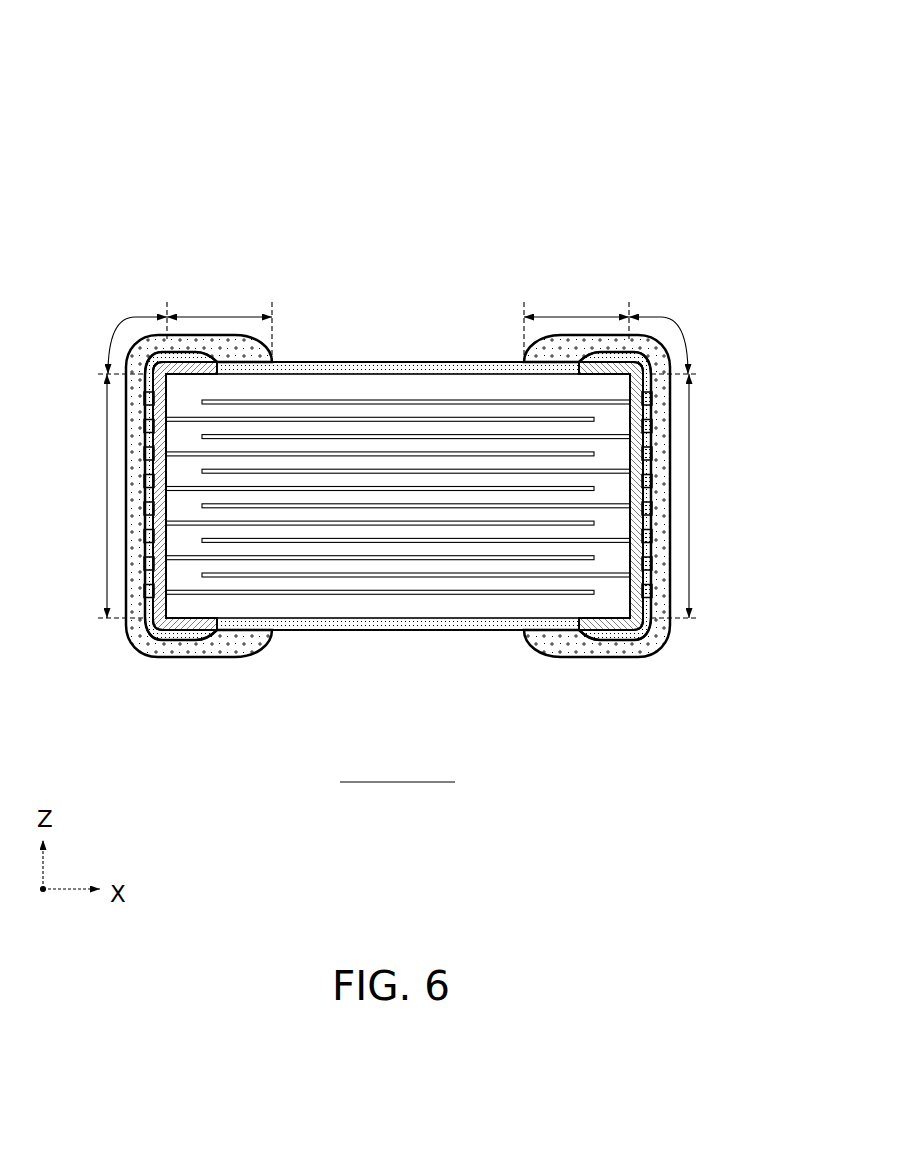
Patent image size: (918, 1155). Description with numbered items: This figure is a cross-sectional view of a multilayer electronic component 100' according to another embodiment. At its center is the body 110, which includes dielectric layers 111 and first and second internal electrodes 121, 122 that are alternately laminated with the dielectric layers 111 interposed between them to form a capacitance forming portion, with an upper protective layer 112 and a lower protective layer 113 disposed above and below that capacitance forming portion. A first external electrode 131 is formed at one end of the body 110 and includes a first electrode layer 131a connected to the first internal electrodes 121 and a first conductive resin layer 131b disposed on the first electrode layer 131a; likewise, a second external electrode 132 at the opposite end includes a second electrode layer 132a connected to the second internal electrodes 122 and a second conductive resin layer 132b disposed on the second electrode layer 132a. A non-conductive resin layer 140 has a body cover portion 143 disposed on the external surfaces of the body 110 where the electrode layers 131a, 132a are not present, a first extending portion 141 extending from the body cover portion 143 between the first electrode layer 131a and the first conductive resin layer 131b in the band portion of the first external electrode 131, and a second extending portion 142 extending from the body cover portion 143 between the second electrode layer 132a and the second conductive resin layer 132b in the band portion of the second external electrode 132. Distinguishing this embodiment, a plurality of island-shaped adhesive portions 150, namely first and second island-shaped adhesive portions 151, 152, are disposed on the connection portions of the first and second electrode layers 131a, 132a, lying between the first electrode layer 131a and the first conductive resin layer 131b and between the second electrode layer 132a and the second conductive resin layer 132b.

The multilayer electronic component 100' is at (417, 411).
The body 110 is at (401, 364).
The dielectric layer 111 is at (343, 413).
The upper protective layer 112 is at (500, 386).
The lower protective layer 113 is at (392, 608).
The first internal electrode 121 is at (282, 420).
The second internal electrode 122 is at (315, 402).
The first external electrode 131 is at (255, 702).
The first electrode layer 131a is at (163, 643).
The first conductive resin layer 131b is at (223, 643).
The second external electrode 132 is at (653, 702).
The second electrode layer 132a is at (633, 643).
The second conductive resin layer 132b is at (570, 643).
The non-conductive resin layer 140 is at (730, 140).
The first extending portion 141 is at (190, 346).
The second extending portion 142 is at (606, 346).
The body cover portion 143 is at (453, 364).
The island-shaped adhesive portions 150 is at (730, 252).
The island-shaped adhesive portion 151 is at (147, 430).
The island-shaped adhesive portion 152 is at (650, 428).